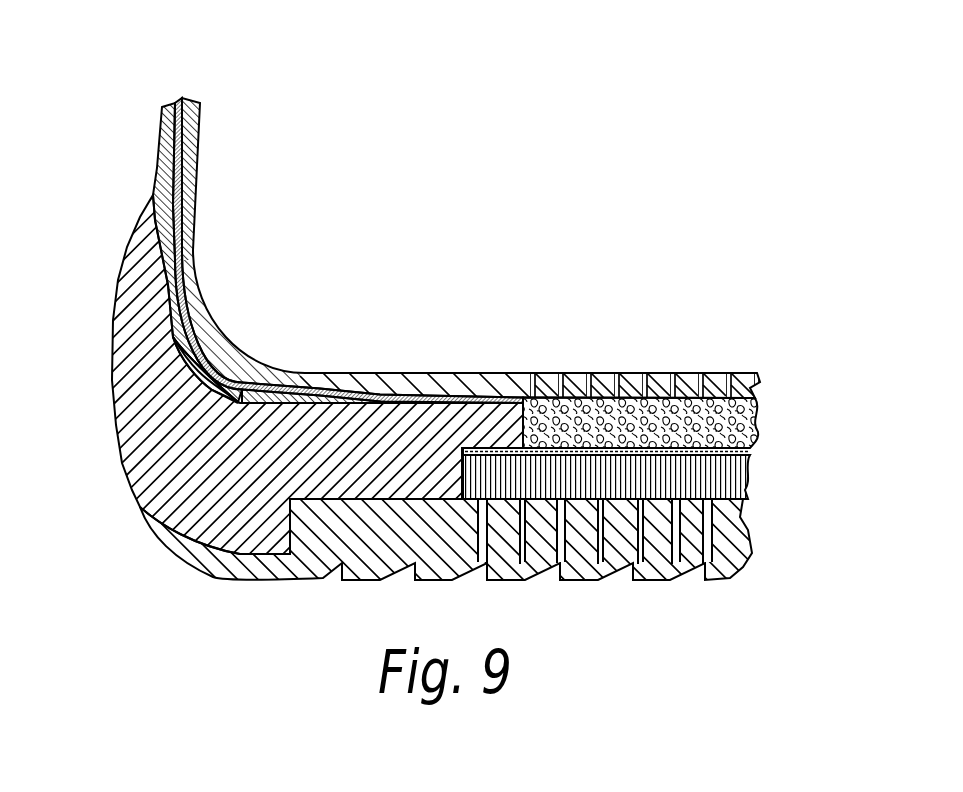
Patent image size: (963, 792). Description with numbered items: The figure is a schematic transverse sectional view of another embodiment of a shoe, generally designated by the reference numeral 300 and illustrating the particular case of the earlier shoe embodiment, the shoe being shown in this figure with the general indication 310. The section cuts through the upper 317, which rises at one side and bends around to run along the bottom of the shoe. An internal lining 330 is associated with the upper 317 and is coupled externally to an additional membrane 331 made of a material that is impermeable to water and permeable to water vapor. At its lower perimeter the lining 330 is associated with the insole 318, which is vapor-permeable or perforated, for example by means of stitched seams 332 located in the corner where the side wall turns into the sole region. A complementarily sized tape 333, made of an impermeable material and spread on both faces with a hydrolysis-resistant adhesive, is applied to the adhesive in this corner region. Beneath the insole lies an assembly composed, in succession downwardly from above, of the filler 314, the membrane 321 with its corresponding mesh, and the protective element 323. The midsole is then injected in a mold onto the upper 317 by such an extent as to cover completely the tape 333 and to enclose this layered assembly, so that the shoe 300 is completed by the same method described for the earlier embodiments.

The shoe 300 is at (151, 569).
The multilayer wall assembly 310 is at (114, 212).
The filler 314 is at (753, 418).
The upper 317 is at (170, 120).
The insole 318 is at (510, 375).
The membrane 321 is at (750, 453).
The protective element 323 is at (700, 477).
The internal lining 330 is at (194, 173).
The additional membrane 331 is at (180, 138).
The stitched seams 332 is at (222, 351).
The tape 333 is at (238, 403).